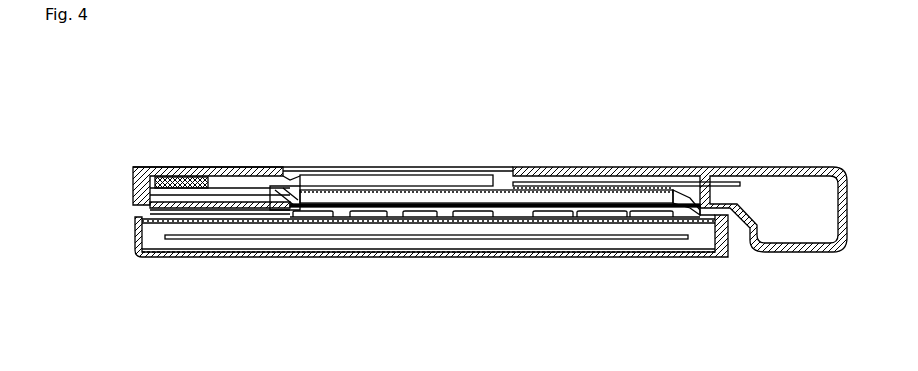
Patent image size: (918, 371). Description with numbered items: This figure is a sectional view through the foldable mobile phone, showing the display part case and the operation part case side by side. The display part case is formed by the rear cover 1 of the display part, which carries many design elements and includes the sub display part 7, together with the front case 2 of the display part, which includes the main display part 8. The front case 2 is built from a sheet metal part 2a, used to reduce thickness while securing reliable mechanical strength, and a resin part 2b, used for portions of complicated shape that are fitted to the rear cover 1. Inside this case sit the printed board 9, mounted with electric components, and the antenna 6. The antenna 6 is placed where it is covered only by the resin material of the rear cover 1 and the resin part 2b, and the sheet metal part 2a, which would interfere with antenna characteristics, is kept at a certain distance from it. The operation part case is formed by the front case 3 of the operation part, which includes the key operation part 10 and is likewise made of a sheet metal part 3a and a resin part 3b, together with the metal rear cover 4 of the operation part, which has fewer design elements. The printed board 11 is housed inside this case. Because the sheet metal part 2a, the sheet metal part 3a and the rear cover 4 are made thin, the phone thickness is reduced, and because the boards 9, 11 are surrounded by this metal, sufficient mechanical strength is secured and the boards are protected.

The rear cover of the display part 1 is at (257, 167).
The front case of the display part 2 is at (133, 200).
The sheet metal part 2a is at (420, 188).
The resin part 2b is at (237, 195).
The front case of the operation part 3 is at (135, 217).
The sheet metal part 3a is at (530, 222).
The resin part 3b is at (183, 219).
The rear cover of the operation part 4 is at (620, 258).
The antenna 6 is at (162, 170).
The sub display part 7 is at (336, 167).
The main display part 8 is at (598, 205).
The printed board 9 is at (720, 183).
The key operation part 10 is at (663, 220).
The printed board 11 is at (360, 262).